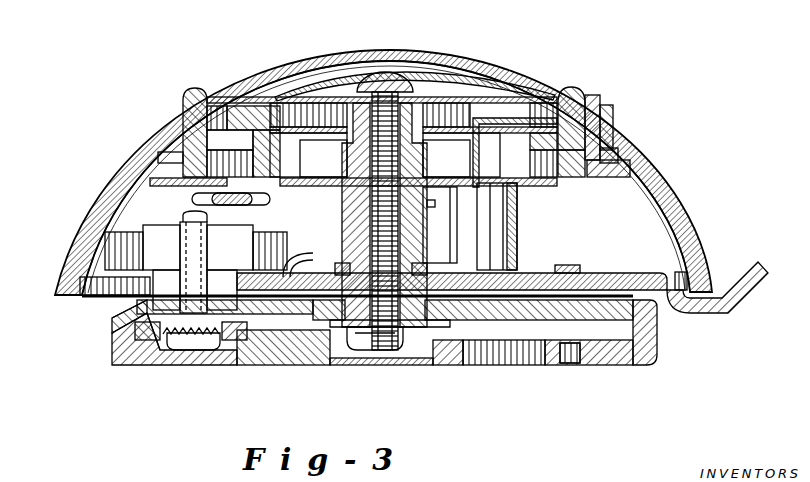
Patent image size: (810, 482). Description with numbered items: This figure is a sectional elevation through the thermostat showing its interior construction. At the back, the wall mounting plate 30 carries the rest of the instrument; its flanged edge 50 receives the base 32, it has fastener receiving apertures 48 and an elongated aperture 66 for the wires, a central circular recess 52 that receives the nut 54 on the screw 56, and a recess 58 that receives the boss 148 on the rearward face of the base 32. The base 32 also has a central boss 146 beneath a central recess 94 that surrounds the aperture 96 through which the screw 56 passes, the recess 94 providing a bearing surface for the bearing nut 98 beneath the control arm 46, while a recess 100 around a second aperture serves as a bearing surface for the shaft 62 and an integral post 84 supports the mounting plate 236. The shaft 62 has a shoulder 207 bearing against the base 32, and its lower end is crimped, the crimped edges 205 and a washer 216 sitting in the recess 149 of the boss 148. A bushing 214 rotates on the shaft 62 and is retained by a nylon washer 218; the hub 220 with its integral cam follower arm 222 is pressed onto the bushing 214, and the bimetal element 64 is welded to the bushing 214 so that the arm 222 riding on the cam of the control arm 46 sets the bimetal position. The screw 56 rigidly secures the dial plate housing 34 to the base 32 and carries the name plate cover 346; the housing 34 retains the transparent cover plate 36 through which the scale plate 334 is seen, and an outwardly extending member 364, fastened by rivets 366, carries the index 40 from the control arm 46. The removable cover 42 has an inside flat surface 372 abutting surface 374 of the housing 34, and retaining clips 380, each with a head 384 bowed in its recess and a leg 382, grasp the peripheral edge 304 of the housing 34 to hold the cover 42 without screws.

The wall mounting plate 30 is at (115, 350).
The base 32 is at (616, 272).
The dial plate housing 34 is at (196, 87).
The transparent cover plate 36 is at (250, 78).
The index 40 is at (495, 116).
The removable cover 42 is at (133, 150).
The control arm 46 is at (748, 270).
The fastener receiving apertures 48 is at (603, 366).
The flanged edge 50 is at (112, 318).
The central circular recess 52 is at (425, 362).
The nut 54 is at (363, 352).
The screw 56 is at (415, 247).
The recess 58 is at (242, 352).
The shaft 62 is at (222, 290).
The bimetal element 64 is at (290, 232).
The elongated aperture 66 is at (466, 366).
The post 84 is at (520, 212).
The central recess 94 is at (241, 309).
The aperture 96 is at (518, 310).
The bearing nut 98 is at (343, 260).
The recess 100 is at (135, 305).
The central boss 146 is at (455, 325).
The boss 148 is at (112, 332).
The recess 149 is at (138, 333).
The crimped edges 205 is at (183, 352).
The shoulder 207 is at (152, 324).
The bushing 214 is at (230, 247).
The washer 216 is at (234, 324).
The nylon washer 218 is at (210, 223).
The hub 220 is at (161, 267).
The cam follower arm 222 is at (297, 258).
The mounting plate 236 is at (353, 189).
The peripheral edge 304 is at (587, 92).
The scale plate 334 is at (224, 128).
The name plate cover 346 is at (465, 75).
The outwardly extending member 364 is at (462, 203).
The rivets 366 is at (568, 266).
The inside flat surface 372 is at (603, 168).
The surface 374 is at (576, 180).
The retaining clips 380 is at (603, 106).
The leg 382 is at (612, 118).
The head 384 is at (620, 142).